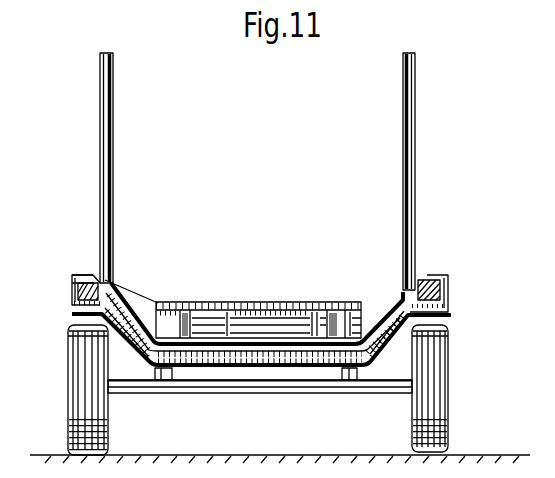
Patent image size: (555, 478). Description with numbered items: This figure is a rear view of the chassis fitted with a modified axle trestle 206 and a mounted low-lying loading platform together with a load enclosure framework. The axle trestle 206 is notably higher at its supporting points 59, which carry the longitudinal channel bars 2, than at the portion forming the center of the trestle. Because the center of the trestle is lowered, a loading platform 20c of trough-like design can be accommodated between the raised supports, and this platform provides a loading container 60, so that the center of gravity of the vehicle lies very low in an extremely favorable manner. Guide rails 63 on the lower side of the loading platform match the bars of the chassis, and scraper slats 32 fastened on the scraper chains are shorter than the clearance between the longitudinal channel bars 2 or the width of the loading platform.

The loading container 60 is at (105, 257).
The scraper slats 32 is at (90, 275).
The longitudinal channel bars 2 is at (73, 290).
The supporting points 59 is at (72, 308).
The guide rails 63 is at (75, 310).
The loading platform 20c is at (375, 308).
The axle trestle 206 is at (307, 363).